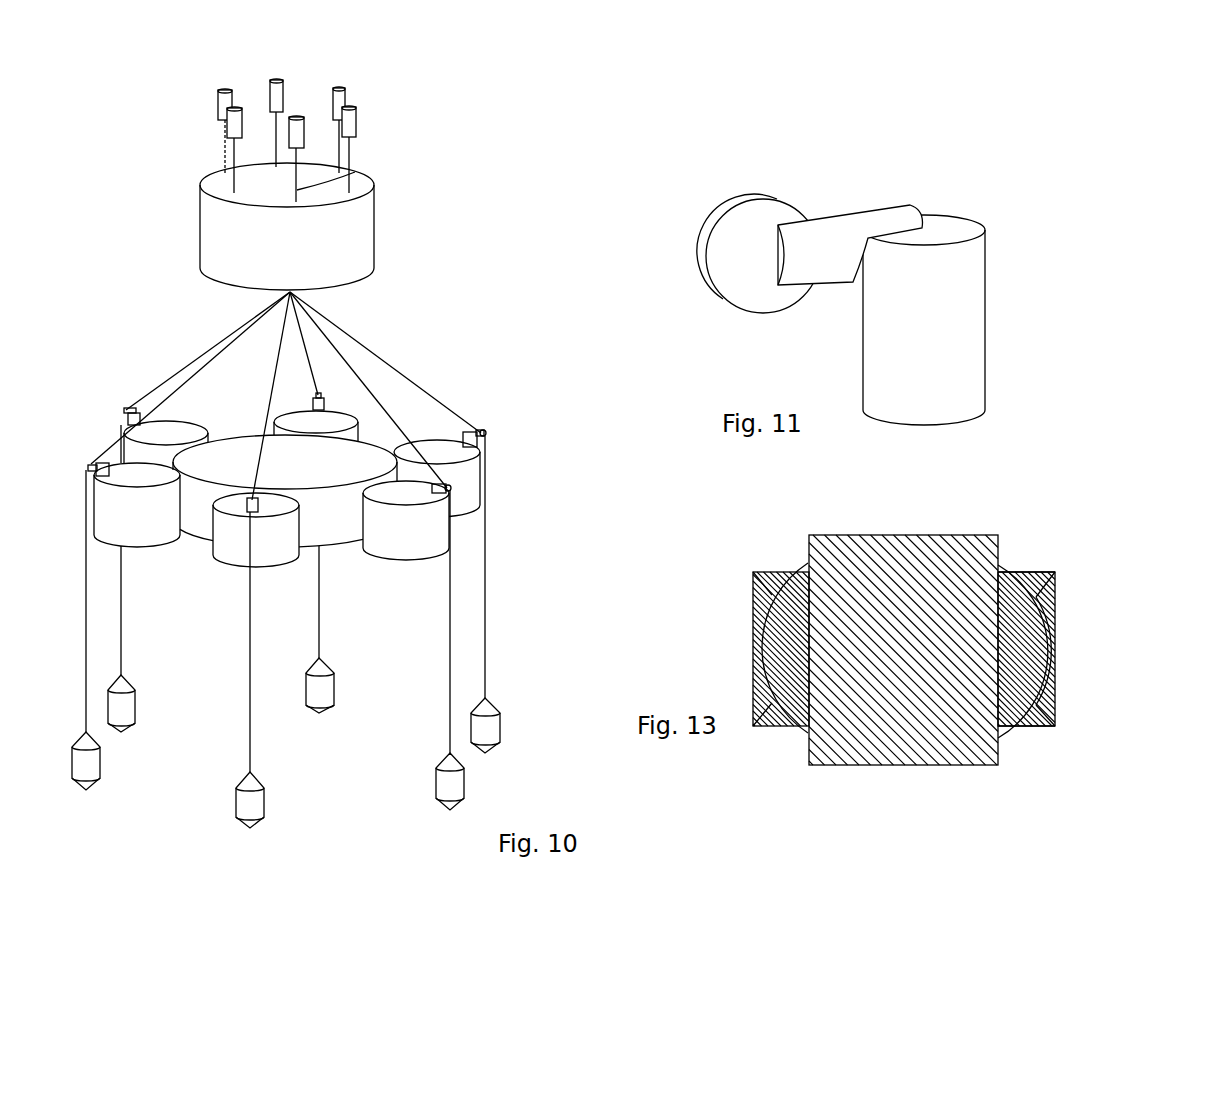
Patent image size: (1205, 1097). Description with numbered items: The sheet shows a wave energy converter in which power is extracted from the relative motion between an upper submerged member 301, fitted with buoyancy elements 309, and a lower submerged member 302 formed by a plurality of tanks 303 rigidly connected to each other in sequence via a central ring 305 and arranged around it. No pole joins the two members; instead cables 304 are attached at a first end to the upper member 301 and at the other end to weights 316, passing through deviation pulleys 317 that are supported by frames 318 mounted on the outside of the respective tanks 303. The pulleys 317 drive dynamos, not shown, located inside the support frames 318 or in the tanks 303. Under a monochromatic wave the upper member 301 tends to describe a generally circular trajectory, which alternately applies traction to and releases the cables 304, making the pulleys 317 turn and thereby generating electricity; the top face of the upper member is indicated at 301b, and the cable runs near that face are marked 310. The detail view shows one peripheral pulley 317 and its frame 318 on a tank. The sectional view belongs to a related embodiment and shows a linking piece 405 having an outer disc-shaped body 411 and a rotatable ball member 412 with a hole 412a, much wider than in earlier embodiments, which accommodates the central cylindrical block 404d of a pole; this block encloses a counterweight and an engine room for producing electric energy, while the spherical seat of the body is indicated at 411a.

In FIG. 10, the upper submerged member 301 is at (380, 227).
In FIG. 10, the top surface of base unit 301b is at (215, 178).
In FIG. 10, the lower submerged member 302 is at (400, 572).
In FIG. 10, the tanks 303 is at (168, 428).
In FIG. 10, the cables 304 is at (180, 360).
In FIG. 10, the central ring 305 is at (350, 548).
In FIG. 10, the buoyancy elements 309 is at (218, 92).
In FIG. 10, the wires 310 is at (342, 153).
In FIG. 10, the weights 316 is at (127, 710).
In FIG. 10, the deviation pulleys 317 is at (90, 462).
In FIG. 11, the deviation pulleys 317 is at (740, 223).
In FIG. 10, the frames 318 is at (310, 397).
In FIG. 11, the frames 318 is at (928, 267).
In FIG. 13, the central cylindrical block 404d is at (920, 737).
In FIG. 13, the linking piece 405 is at (750, 560).
In FIG. 13, the outer disc-shaped body 411 is at (1058, 627).
In FIG. 13, the socket surface 411a is at (1052, 662).
In FIG. 13, the rotatable ball member 412 is at (1028, 580).
In FIG. 13, the hole 412a is at (998, 560).